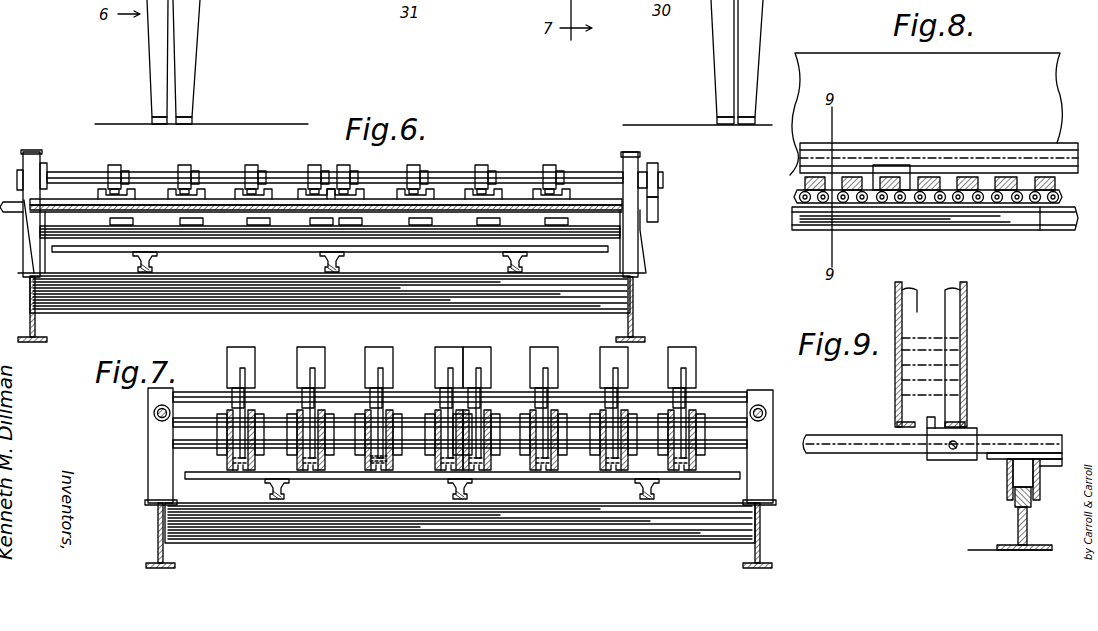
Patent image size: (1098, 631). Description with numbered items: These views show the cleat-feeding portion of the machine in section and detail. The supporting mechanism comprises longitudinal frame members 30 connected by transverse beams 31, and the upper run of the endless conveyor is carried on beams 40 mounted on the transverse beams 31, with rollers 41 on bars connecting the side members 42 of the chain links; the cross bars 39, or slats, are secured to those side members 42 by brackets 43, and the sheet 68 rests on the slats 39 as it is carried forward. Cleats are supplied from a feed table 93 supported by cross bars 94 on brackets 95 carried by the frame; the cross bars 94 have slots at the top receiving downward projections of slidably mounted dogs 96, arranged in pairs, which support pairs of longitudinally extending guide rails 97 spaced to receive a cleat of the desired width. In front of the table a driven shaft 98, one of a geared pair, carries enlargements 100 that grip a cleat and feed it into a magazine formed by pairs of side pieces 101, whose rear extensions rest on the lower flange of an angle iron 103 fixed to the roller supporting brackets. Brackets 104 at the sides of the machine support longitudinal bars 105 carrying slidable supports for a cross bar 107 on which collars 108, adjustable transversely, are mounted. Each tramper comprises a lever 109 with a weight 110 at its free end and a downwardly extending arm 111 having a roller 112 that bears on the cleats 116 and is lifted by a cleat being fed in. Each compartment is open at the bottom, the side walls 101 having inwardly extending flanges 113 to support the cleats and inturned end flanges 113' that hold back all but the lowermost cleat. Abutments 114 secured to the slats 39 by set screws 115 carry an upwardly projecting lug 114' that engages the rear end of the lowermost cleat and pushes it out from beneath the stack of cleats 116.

In FIG. 6, the longitudinal frame members 30 is at (636, 294).
In FIG. 7, the longitudinal frame members 30 is at (764, 524).
In FIG. 6, the transverse beams 31 is at (185, 302).
In FIG. 7, the transverse beams 31 is at (423, 531).
In FIG. 6, the cross bars 39 is at (418, 247).
In FIG. 7, the cross bars 39 is at (505, 473).
In FIG. 8, the cross bars 39 is at (800, 182).
In FIG. 9, the cross bars 39 is at (1037, 440).
In FIG. 6, the beams 40 is at (527, 268).
In FIG. 7, the beams 40 is at (284, 499).
In FIG. 8, the beams 40 is at (987, 218).
In FIG. 9, the beams 40 is at (1027, 527).
In FIG. 8, the rollers 41 is at (1040, 210).
In FIG. 9, the rollers 41 is at (1020, 470).
In FIG. 9, the side members 42 is at (1012, 500).
In FIG. 6, the brackets 43 is at (322, 263).
In FIG. 7, the brackets 43 is at (266, 491).
In FIG. 8, the brackets 43 is at (793, 199).
In FIG. 9, the brackets 43 is at (1058, 461).
In FIG. 9, the sheet 68 is at (830, 430).
In FIG. 6, the feed table 93 is at (583, 205).
In FIG. 6, the cross bars 94 is at (600, 212).
In FIG. 6, the brackets 95 is at (630, 260).
In FIG. 6, the dogs 96 is at (522, 192).
In FIG. 6, the guide rails 97 is at (360, 200).
In FIG. 6, the shaft 98 is at (453, 173).
In FIG. 6, the enlargements 100 is at (207, 154).
In FIG. 7, the side pieces 101 is at (667, 412).
In FIG. 9, the side pieces 101 is at (895, 310).
In FIG. 6, the angle iron 103 is at (597, 233).
In FIG. 7, the brackets 104 is at (150, 468).
In FIG. 7, the longitudinal bars 105 is at (152, 414).
In FIG. 7, the cross bar 107 is at (500, 397).
In FIG. 7, the collars 108 is at (280, 396).
In FIG. 7, the levers 109 is at (380, 369).
In FIG. 7, the weights 110 is at (383, 356).
In FIG. 7, the arms 111 is at (383, 409).
In FIG. 7, the roller 112 is at (378, 443).
In FIG. 9, the flanges 113 is at (934, 400).
In FIG. 9, the end flanges 113' is at (931, 343).
In FIG. 8, the abutments 114 is at (894, 154).
In FIG. 9, the abutments 114 is at (942, 466).
In FIG. 9, the lug 114' is at (904, 454).
In FIG. 9, the set screws 115 is at (957, 450).
In FIG. 7, the cleats 116 is at (548, 476).
In FIG. 8, the cleats 116 is at (999, 145).
In FIG. 9, the cleats 116 is at (950, 339).